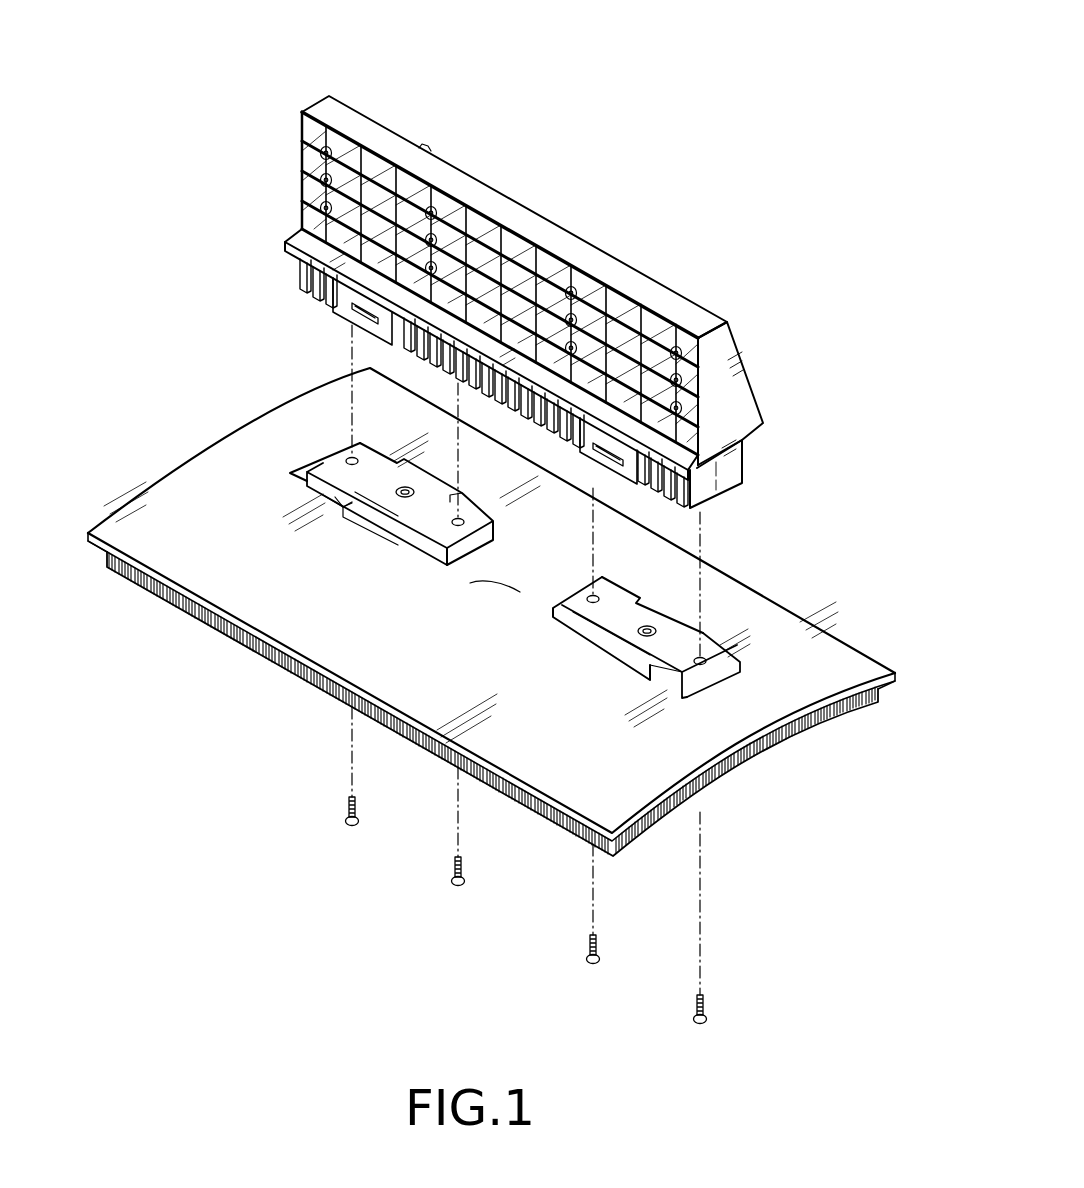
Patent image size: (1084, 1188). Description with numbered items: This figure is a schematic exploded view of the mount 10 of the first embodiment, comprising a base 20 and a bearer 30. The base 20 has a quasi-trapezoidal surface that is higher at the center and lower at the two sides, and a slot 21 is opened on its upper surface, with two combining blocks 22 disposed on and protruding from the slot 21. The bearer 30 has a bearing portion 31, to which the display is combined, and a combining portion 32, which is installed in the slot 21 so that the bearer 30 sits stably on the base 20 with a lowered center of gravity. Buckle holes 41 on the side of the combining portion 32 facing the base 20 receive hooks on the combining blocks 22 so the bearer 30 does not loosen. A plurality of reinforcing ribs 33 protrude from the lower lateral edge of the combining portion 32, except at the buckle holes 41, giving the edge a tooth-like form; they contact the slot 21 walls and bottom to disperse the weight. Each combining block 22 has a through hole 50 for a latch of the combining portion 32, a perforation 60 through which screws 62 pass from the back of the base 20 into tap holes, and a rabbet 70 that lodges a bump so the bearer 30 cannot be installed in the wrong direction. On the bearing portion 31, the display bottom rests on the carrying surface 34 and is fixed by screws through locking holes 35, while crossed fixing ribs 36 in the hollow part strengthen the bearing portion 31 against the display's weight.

The mount 10 is at (176, 252).
The base 20 is at (862, 650).
The slot 21 is at (520, 592).
The combining block 22 is at (720, 637).
The bearer 30 is at (835, 350).
The bearing portion 31 is at (735, 395).
The combining portion 32 is at (730, 459).
The reinforcing ribs 33 is at (300, 279).
The carrying surface 34 is at (298, 239).
The locking holes 35 is at (322, 131).
The fixing ribs 36 is at (505, 232).
The buckle holes 41 is at (341, 322).
The through hole 50 is at (566, 640).
The perforation 60 is at (343, 450).
The screws 62 is at (707, 1022).
The rabbet 70 is at (343, 507).